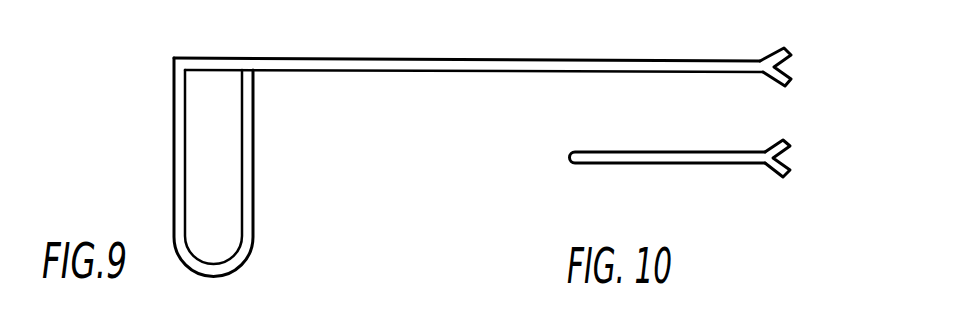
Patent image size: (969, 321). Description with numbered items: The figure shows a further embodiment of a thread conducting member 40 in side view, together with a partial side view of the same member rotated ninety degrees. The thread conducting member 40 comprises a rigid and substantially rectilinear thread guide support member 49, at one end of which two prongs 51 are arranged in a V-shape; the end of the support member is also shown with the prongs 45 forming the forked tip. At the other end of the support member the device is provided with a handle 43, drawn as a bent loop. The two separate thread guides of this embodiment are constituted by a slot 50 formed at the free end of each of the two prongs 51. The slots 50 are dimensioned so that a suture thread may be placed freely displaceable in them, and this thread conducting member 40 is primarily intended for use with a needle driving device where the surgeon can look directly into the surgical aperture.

In FIG. 9, the thread conducting member 40 is at (362, 50).
In FIG. 9, the thread guide support member 49 is at (434, 72).
In FIG. 9, the handle 43 is at (243, 239).
In FIG. 9, the prongs 45 is at (792, 52).
In FIG. 9, the prongs 51 is at (770, 53).
In FIG. 10, the prongs 51 is at (777, 143).
In FIG. 10, the slot 50 is at (787, 155).